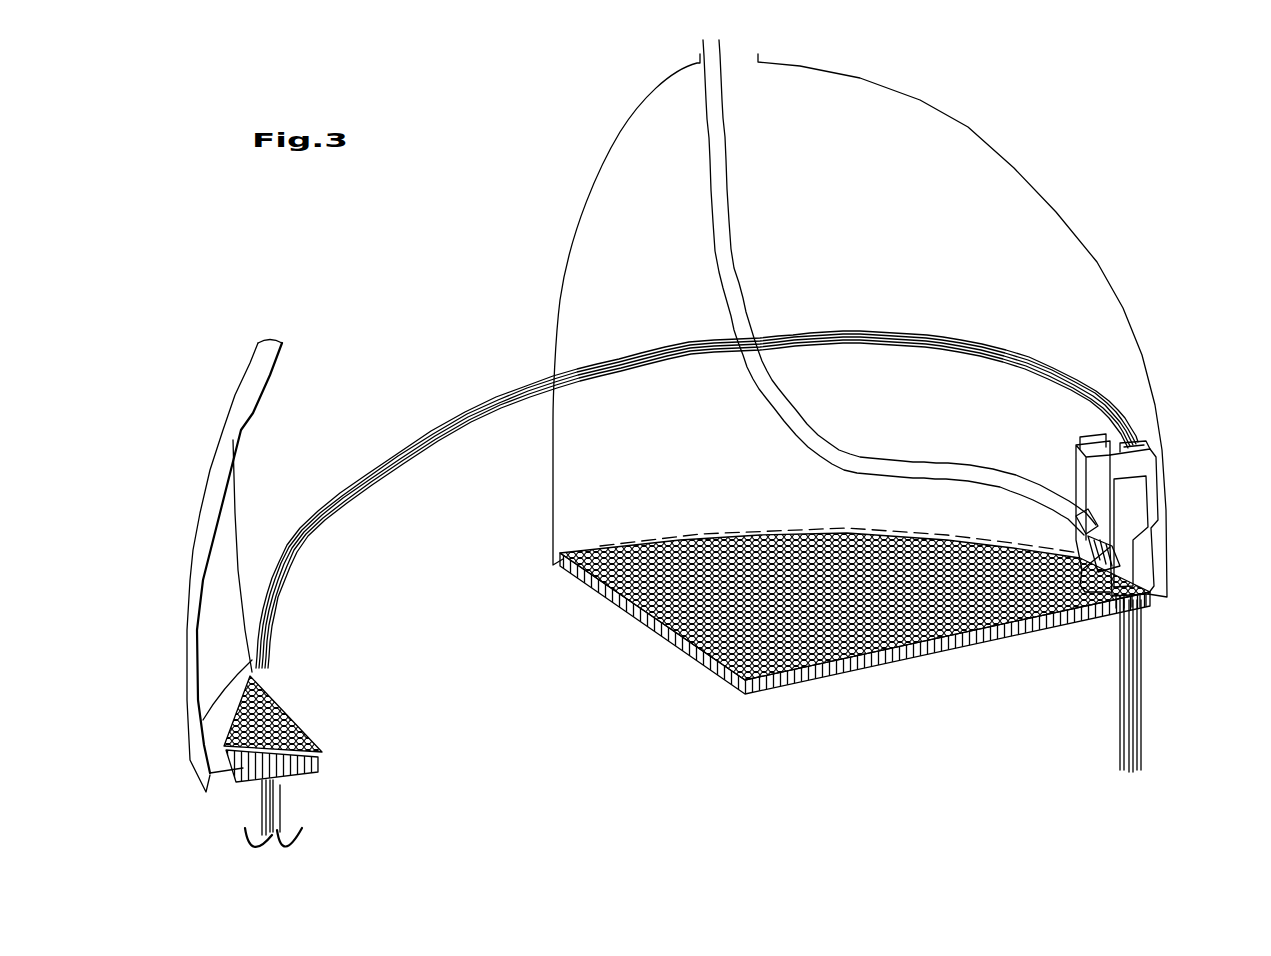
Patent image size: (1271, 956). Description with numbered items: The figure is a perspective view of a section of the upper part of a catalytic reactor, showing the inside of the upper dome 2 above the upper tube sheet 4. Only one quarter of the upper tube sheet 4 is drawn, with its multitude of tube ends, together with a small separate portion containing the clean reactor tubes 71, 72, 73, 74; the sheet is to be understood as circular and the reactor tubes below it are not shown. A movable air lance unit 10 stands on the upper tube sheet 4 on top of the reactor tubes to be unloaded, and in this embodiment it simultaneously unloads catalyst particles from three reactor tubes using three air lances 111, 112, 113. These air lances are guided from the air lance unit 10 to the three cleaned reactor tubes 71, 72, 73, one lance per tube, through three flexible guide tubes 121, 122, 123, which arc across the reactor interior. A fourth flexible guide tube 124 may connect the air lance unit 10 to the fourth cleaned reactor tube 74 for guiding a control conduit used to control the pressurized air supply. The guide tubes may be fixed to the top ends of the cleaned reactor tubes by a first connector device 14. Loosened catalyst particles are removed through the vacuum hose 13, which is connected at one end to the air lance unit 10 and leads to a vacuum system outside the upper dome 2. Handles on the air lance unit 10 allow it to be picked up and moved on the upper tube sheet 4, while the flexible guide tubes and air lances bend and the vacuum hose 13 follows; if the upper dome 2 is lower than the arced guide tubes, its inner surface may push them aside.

The upper dome 2 is at (244, 400).
The upper tube sheet 4 is at (660, 650).
The air lance unit 10 is at (1143, 540).
The vacuum hose 13 is at (725, 178).
The first connector device 14 is at (697, 502).
The cleaned reactor tube 71 is at (247, 807).
The cleaned reactor tube 72 is at (242, 844).
The cleaned reactor tube 73 is at (303, 840).
The fourth cleaned reactor tube 74 is at (292, 806).
The air lance 111 is at (1122, 768).
The air lance 112 is at (1133, 772).
The air lance 113 is at (1140, 770).
The flexible guide tube 121 is at (1103, 412).
The flexible guide tube 122 is at (1118, 423).
The flexible guide tube 123 is at (1130, 438).
The fourth flexible guide tube 124 is at (1118, 408).